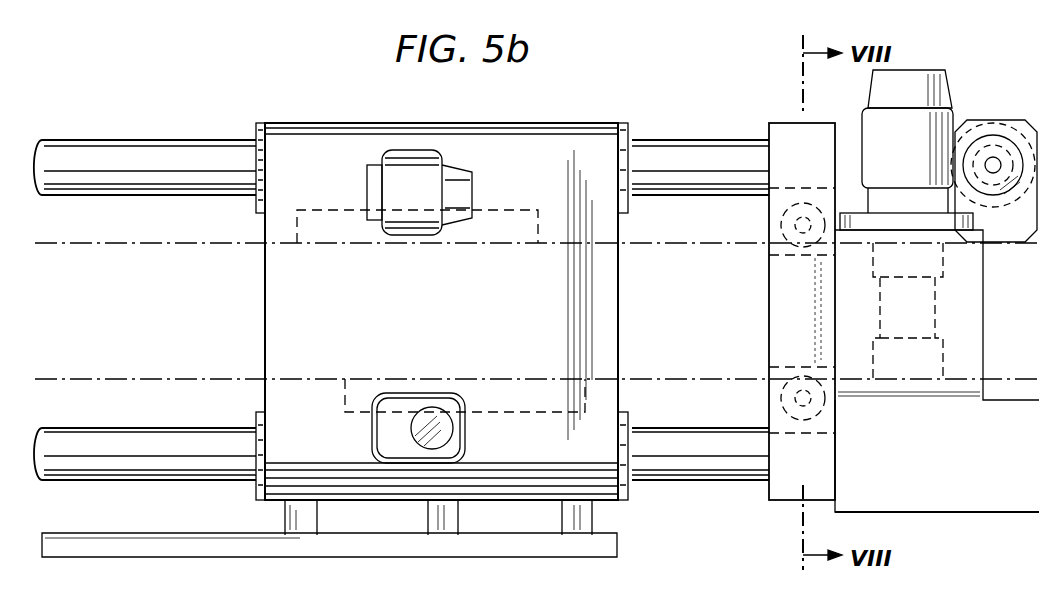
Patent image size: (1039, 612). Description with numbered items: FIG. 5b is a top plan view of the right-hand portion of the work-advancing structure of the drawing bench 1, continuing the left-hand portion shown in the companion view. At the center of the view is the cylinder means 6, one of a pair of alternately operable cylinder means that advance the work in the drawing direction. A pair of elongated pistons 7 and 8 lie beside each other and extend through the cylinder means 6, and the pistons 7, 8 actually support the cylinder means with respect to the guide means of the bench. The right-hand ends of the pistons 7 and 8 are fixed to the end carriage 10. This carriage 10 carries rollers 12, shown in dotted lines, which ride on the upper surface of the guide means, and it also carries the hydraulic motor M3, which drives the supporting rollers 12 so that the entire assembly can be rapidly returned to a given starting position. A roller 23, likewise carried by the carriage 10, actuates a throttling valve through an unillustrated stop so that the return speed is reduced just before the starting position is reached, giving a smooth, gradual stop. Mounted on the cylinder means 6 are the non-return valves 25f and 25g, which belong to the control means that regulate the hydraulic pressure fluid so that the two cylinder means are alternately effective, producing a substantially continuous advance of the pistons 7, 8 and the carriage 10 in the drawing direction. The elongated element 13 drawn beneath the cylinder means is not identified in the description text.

The drawing bench 1 is at (108, 260).
The cylinder means 6 is at (598, 312).
The piston 7 is at (130, 150).
The piston 8 is at (128, 468).
The end carriage 10 is at (968, 490).
The rollers 12 is at (935, 350).
The base plate 13 is at (158, 548).
The roller 23 is at (984, 128).
The non-return valve 25f is at (462, 448).
The non-return valve 25g is at (472, 186).
The hydraulic motor M3 is at (946, 90).